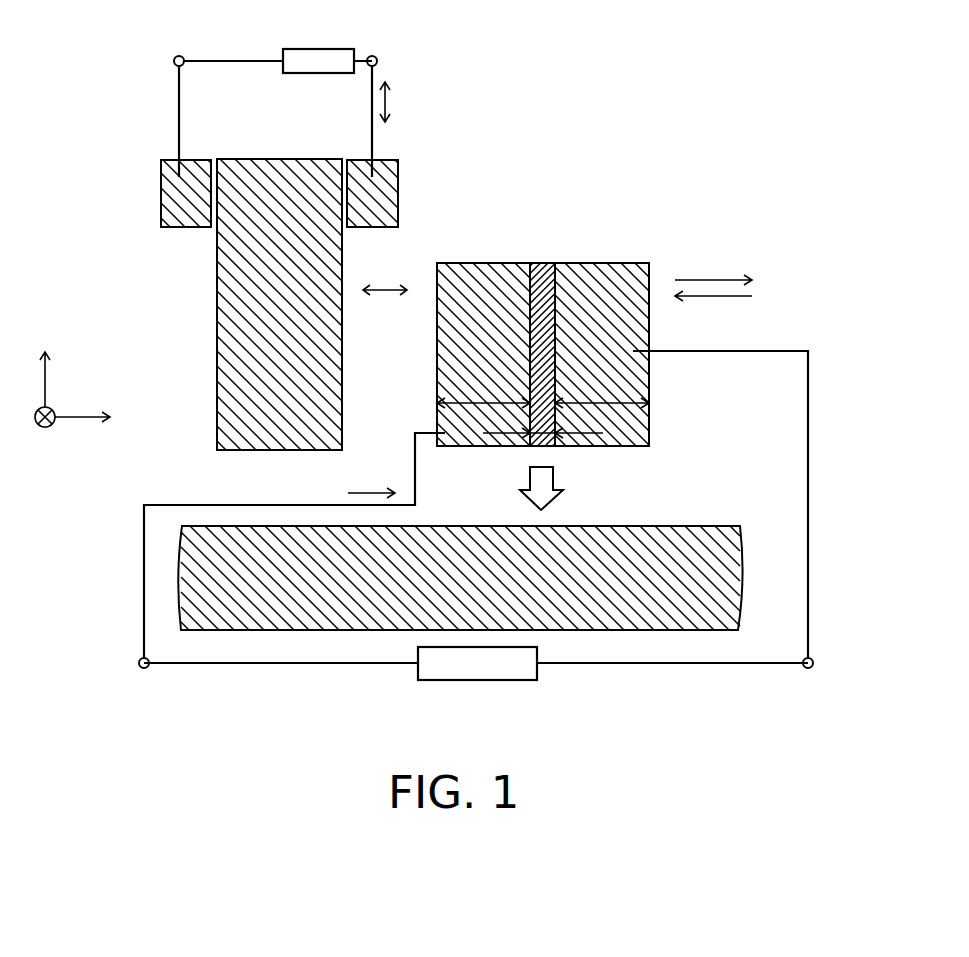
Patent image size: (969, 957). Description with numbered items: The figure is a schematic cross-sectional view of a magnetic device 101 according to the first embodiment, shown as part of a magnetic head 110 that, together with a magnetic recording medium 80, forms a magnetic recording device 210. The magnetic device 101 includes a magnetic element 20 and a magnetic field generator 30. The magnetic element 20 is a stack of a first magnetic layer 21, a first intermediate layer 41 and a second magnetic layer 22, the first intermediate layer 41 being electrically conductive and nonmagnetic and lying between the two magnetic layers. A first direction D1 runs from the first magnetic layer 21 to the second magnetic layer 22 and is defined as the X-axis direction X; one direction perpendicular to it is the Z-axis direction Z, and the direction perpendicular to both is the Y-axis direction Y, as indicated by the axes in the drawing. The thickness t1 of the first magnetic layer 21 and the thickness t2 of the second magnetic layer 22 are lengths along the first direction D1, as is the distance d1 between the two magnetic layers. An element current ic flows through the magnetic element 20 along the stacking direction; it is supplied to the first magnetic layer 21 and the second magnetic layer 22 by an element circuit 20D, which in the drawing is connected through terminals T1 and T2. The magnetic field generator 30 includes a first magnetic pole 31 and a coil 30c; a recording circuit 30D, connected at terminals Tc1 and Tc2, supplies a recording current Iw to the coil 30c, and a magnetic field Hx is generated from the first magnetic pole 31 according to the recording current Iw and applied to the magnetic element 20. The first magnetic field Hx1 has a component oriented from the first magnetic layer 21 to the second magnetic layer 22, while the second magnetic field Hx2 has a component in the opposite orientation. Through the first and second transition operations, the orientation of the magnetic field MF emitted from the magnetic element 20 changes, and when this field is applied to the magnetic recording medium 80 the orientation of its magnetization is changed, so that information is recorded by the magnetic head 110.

The magnetic device 101 is at (660, 163).
The magnetic head 110 is at (747, 150).
The magnetic recording device 210 is at (818, 128).
The magnetic element 20 is at (623, 190).
The first magnetic layer 21 is at (483, 291).
The first intermediate layer 41 is at (542, 288).
The second magnetic layer 22 is at (603, 292).
The magnetic field generator 30 is at (301, 117).
The coil 30c is at (193, 177).
The first magnetic pole 31 is at (280, 177).
The recording circuit 30D is at (282, 50).
The element circuit 20D is at (538, 670).
The magnetic recording medium 80 is at (713, 593).
The coil terminal 1 Tc1 is at (174, 61).
The coil terminal 2 Tc2 is at (377, 60).
The element terminal 1 T1 is at (139, 663).
The element terminal 2 T2 is at (813, 663).
The recording current Iw is at (388, 100).
The element current ic is at (371, 482).
The magnetic field Hx is at (383, 288).
The first magnetic field Hx1 is at (707, 280).
The second magnetic field Hx2 is at (715, 296).
The magnetic field emitted from the magnetic element MF is at (553, 477).
The thickness of the first magnetic layer t1 is at (477, 400).
The thickness of the second magnetic layer t2 is at (607, 402).
The distance between the first magnetic layer and the second magnetic layer d1 is at (547, 430).
The X-axis direction X is at (93, 419).
The Y-axis direction Y is at (31, 419).
The Z-axis direction Z is at (45, 365).
The first direction D1 is at (132, 445).